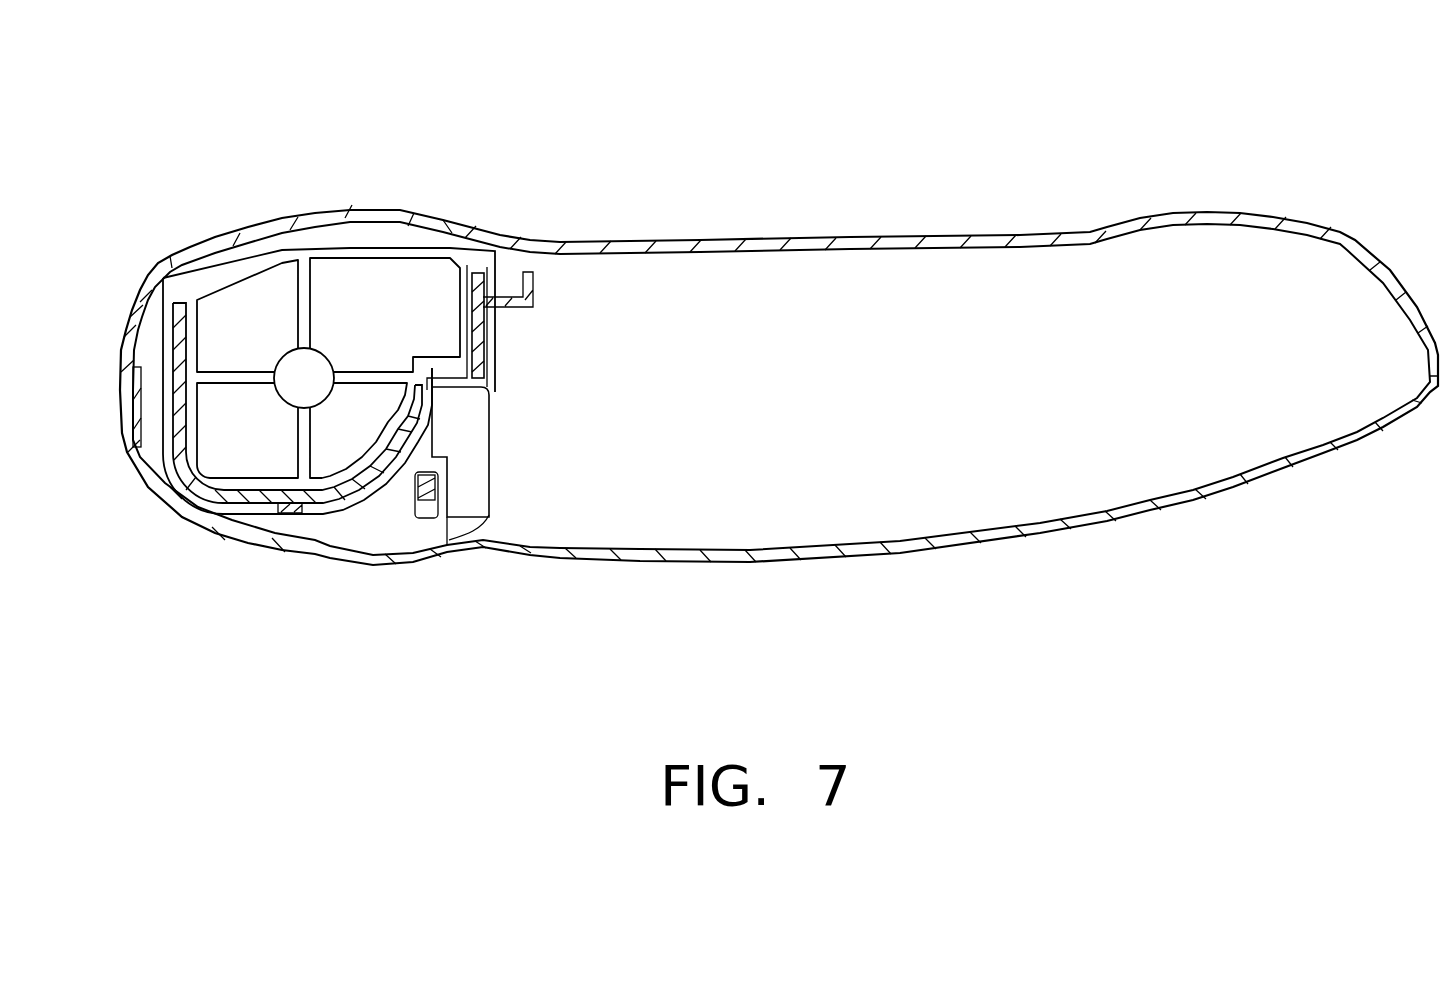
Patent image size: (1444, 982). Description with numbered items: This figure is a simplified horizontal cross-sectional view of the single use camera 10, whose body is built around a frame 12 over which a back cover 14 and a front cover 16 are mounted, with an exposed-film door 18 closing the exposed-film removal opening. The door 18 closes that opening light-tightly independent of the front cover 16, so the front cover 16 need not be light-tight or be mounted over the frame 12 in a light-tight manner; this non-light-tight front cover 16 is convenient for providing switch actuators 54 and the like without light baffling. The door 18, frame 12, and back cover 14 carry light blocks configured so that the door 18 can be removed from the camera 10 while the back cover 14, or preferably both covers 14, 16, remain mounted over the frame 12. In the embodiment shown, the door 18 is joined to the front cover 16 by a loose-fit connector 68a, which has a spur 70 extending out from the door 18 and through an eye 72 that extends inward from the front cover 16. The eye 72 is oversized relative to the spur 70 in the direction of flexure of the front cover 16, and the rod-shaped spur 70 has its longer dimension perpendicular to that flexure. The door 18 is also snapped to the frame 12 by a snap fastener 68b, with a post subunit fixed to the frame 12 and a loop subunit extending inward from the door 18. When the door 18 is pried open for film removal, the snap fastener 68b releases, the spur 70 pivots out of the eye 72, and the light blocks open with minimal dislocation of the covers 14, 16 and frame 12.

The single use camera 10 is at (1271, 106).
The frame 12 is at (496, 398).
The back cover 14 is at (956, 240).
The front cover 16 is at (1252, 490).
The exposed-film door 18 is at (445, 219).
The switch actuators 54 is at (510, 347).
The loose-fit connector 68a is at (560, 517).
The snap fastener 68b is at (310, 516).
The spur 70 is at (439, 490).
The eye 72 is at (493, 526).